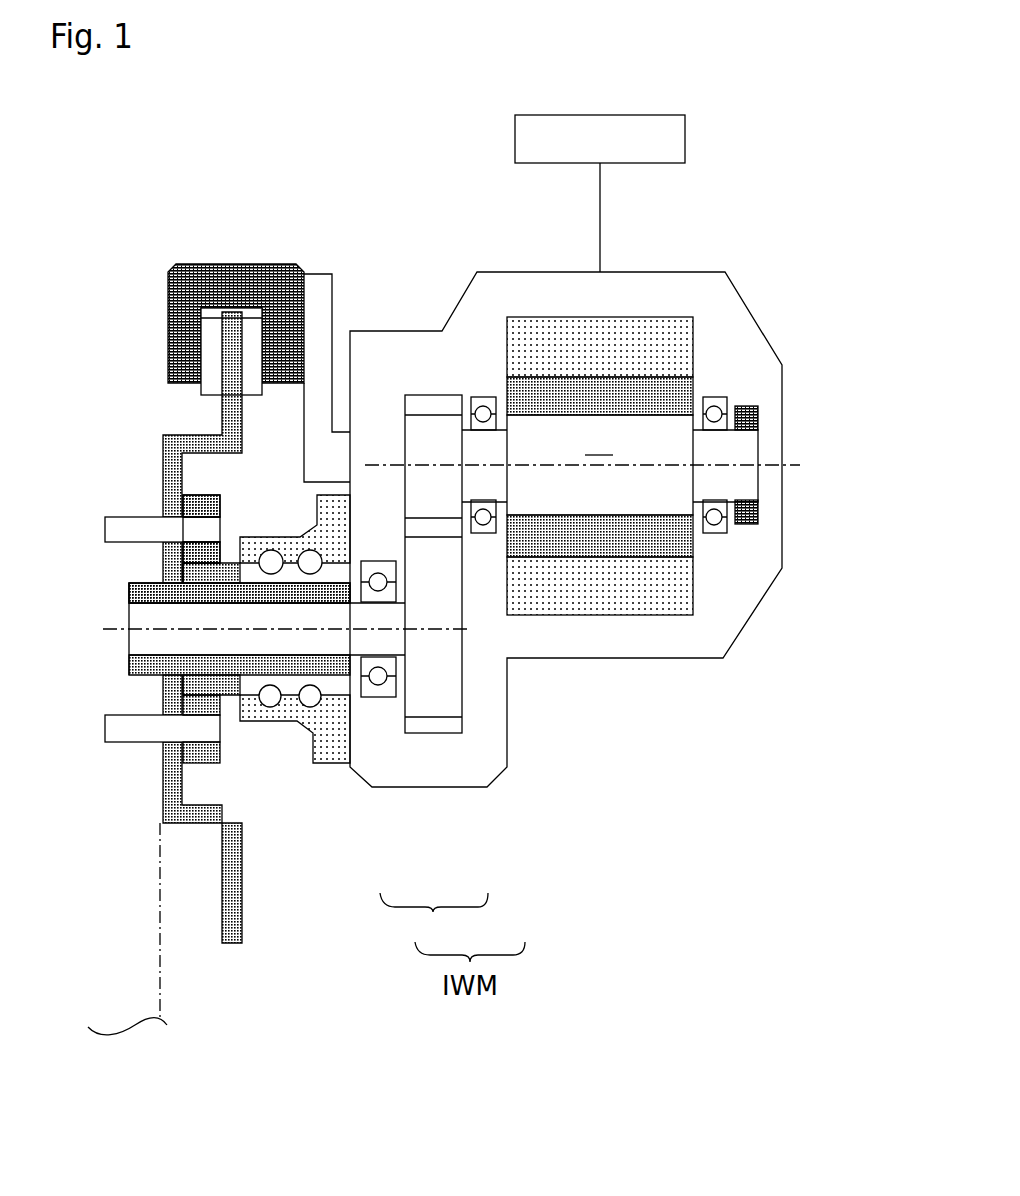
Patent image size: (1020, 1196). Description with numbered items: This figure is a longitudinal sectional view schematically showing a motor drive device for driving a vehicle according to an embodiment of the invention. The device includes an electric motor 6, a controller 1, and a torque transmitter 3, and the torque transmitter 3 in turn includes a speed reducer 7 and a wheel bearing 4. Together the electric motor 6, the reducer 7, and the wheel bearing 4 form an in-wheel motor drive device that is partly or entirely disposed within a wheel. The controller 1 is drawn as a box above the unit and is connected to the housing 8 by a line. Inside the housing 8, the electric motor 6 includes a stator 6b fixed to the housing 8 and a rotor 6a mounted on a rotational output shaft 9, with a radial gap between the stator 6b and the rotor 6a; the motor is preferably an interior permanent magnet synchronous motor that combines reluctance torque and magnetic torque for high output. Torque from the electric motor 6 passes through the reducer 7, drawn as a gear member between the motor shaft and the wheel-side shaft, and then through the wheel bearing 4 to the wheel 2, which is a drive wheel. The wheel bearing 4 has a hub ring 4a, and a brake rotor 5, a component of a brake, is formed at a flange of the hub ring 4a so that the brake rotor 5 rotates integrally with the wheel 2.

The controller 1 is at (552, 158).
The wheel 2 is at (143, 953).
The torque transmitter 3 is at (434, 922).
The wheel bearing 4 is at (243, 698).
The hub ring 4a is at (152, 588).
The brake rotor 5 is at (177, 458).
The electric motor 6 is at (597, 570).
The rotor 6a is at (677, 397).
The stator 6b is at (640, 346).
The speed reducer 7 is at (439, 735).
The housing 8 is at (733, 593).
The rotational output shaft 9 is at (582, 465).